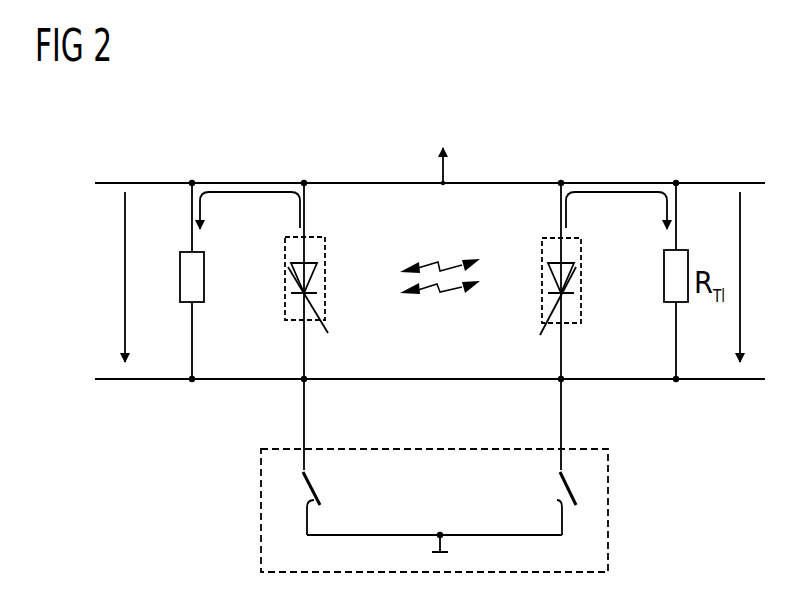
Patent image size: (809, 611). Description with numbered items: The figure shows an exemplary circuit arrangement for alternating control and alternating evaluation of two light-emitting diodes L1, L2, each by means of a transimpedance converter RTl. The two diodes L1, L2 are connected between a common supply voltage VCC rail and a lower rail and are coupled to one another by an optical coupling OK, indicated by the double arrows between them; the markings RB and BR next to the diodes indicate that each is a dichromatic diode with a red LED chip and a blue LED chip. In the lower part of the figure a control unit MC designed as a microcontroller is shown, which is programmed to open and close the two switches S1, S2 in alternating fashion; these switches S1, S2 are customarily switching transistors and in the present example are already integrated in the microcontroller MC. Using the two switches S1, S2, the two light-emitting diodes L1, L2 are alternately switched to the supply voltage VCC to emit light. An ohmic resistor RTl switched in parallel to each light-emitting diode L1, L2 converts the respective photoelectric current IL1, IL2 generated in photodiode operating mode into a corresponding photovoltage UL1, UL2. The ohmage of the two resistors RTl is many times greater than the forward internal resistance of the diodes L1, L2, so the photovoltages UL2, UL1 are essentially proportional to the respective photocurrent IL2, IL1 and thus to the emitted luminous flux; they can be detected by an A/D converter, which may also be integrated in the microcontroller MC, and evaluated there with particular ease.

The supply voltage VCC is at (443, 141).
The photovoltage UL2 is at (104, 277).
The photovoltage UL1 is at (760, 277).
The resistor, transimpedance converter RTl is at (173, 281).
The photocurrent IL2 is at (250, 217).
The photocurrent IL1 is at (616, 217).
The light-emitting diode L1 is at (313, 252).
The light-emitting diode L2 is at (553, 250).
The red LED chip, blue LED chip RB is at (330, 353).
The blue LED chip, red LED chip BR is at (535, 353).
The optical coupling OK is at (458, 332).
The control unit, microcontroller MC is at (450, 510).
The controllable switch, transistor S1 is at (303, 484).
The controllable switch, transistor S2 is at (576, 488).